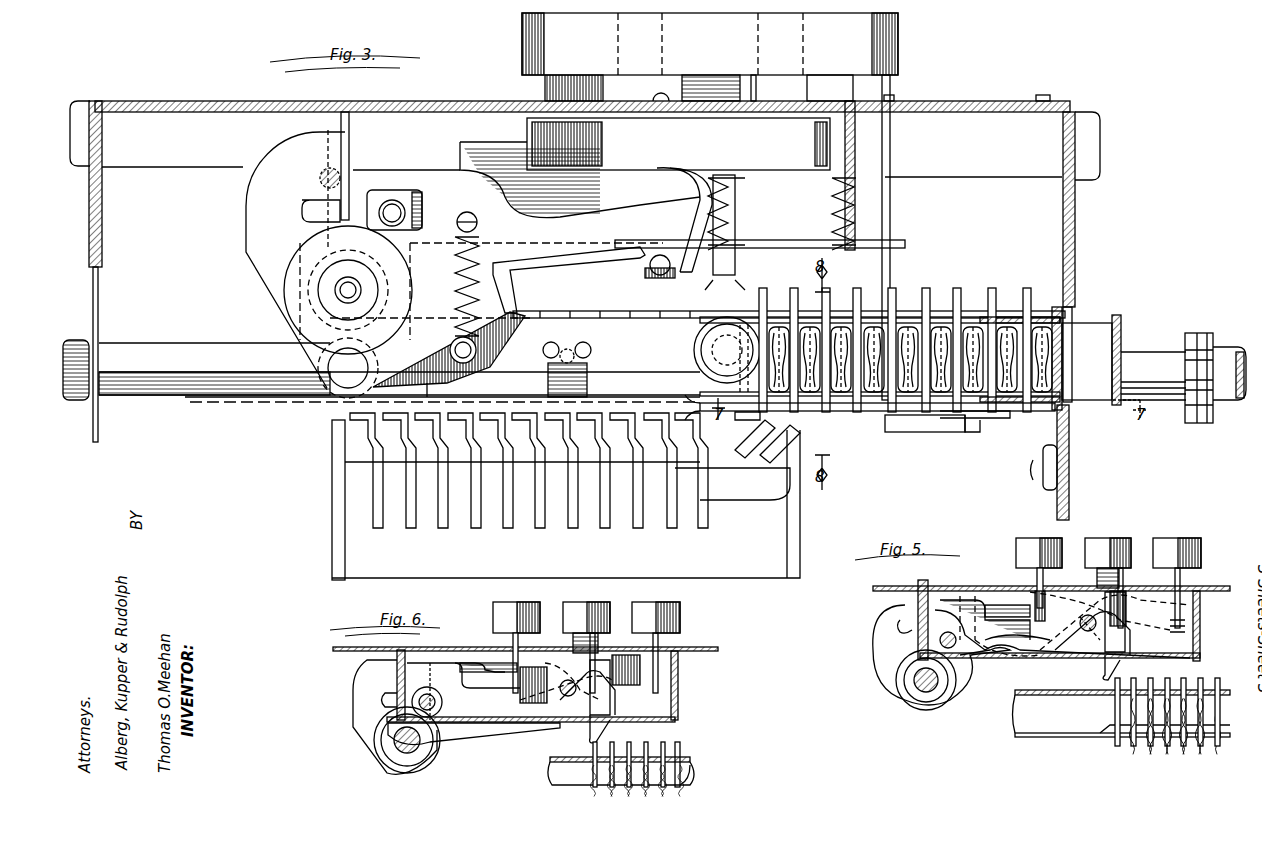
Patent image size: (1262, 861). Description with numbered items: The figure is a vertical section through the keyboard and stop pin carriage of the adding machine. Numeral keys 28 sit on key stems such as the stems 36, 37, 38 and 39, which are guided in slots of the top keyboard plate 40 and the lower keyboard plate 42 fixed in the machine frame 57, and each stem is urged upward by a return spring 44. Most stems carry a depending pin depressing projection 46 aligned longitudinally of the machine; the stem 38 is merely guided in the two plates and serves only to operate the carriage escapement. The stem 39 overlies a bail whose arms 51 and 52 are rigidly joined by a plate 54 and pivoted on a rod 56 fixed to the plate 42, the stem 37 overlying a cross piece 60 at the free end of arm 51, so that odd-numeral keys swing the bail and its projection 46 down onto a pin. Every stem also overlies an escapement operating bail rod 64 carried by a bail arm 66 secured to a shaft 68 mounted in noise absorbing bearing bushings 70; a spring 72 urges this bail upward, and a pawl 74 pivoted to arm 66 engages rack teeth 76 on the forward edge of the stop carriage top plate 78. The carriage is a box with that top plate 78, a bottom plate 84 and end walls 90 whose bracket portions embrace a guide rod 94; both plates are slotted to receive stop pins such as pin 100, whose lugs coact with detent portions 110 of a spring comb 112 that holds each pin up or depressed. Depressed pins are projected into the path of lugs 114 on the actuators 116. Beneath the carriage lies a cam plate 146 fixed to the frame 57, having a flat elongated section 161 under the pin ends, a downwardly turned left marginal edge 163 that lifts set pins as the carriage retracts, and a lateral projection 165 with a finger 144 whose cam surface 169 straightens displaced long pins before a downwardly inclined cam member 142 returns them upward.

In FIG. 3, the numeral keys 28 is at (725, 28).
In FIG. 5, the numeral keys 28 is at (1045, 538).
In FIG. 6, the key stem 36 is at (660, 642).
In FIG. 5, the key stem 37 is at (1037, 577).
In FIG. 6, the key stem 37 is at (513, 640).
In FIG. 5, the key stem 38 is at (1123, 580).
In FIG. 6, the key stem 38 is at (598, 642).
In FIG. 5, the key stem 39 is at (1160, 607).
In FIG. 3, the top keyboard plate 40 is at (945, 106).
In FIG. 5, the top keyboard plate 40 is at (1200, 586).
In FIG. 6, the top keyboard plate 40 is at (390, 650).
In FIG. 3, the lower keyboard plate 42 is at (898, 240).
In FIG. 5, the lower keyboard plate 42 is at (1075, 660).
In FIG. 6, the lower keyboard plate 42 is at (580, 722).
In FIG. 3, the return spring 44 is at (748, 205).
In FIG. 3, the pin depressing projection 46 is at (710, 276).
In FIG. 5, the pin depressing projection 46 is at (1120, 660).
In FIG. 6, the pin depressing projection 46 is at (600, 705).
In FIG. 6, the bail arm 51 is at (472, 700).
In FIG. 3, the bail arm 52 is at (480, 160).
In FIG. 5, the plate 54 is at (985, 602).
In FIG. 6, the plate 54 is at (478, 660).
In FIG. 3, the rod 56 is at (392, 210).
In FIG. 6, the rod 56 is at (427, 694).
In FIG. 3, the machine frame 57 is at (102, 230).
In FIG. 6, the cross piece 60 is at (555, 720).
In FIG. 5, the escapement operating bail rod 64 is at (1085, 632).
In FIG. 6, the escapement operating bail rod 64 is at (570, 697).
In FIG. 3, the bail arm 66 is at (535, 258).
In FIG. 3, the shaft 68 is at (340, 290).
In FIG. 5, the shaft 68 is at (1031, 657).
In FIG. 6, the shaft 68 is at (400, 745).
In FIG. 3, the bearing bushings 70 is at (330, 305).
In FIG. 3, the spring 72 is at (645, 268).
In FIG. 3, the pawl 74 is at (498, 350).
In FIG. 3, the rack teeth 76 is at (553, 318).
In FIG. 3, the stop carriage top plate 78 is at (1010, 310).
In FIG. 5, the stop carriage top plate 78 is at (1070, 692).
In FIG. 6, the stop carriage top plate 78 is at (688, 757).
In FIG. 3, the bottom plate 84 is at (1098, 405).
In FIG. 5, the bottom plate 84 is at (1118, 748).
In FIG. 3, the end walls 90 is at (1122, 345).
In FIG. 3, the guide rod 94 is at (1162, 355).
In FIG. 3, the stop pin 100 is at (740, 300).
In FIG. 5, the stop pin 100 is at (1152, 748).
In FIG. 6, the stop pin 100 is at (600, 757).
In FIG. 3, the detent portions 110 is at (1024, 359).
In FIG. 6, the detent portions 110 is at (685, 770).
In FIG. 3, the spring comb 112 is at (1036, 318).
In FIG. 3, the lugs 114 is at (680, 470).
In FIG. 3, the actuators 116 is at (543, 510).
In FIG. 3, the cam member 142 is at (830, 435).
In FIG. 3, the finger 144 is at (751, 409).
In FIG. 3, the cam plate 146 is at (898, 432).
In FIG. 3, the flat elongated section 161 is at (975, 420).
In FIG. 3, the left marginal edge 163 is at (780, 465).
In FIG. 3, the lateral projection 165 is at (945, 432).
In FIG. 3, the cam surface 169 is at (743, 443).